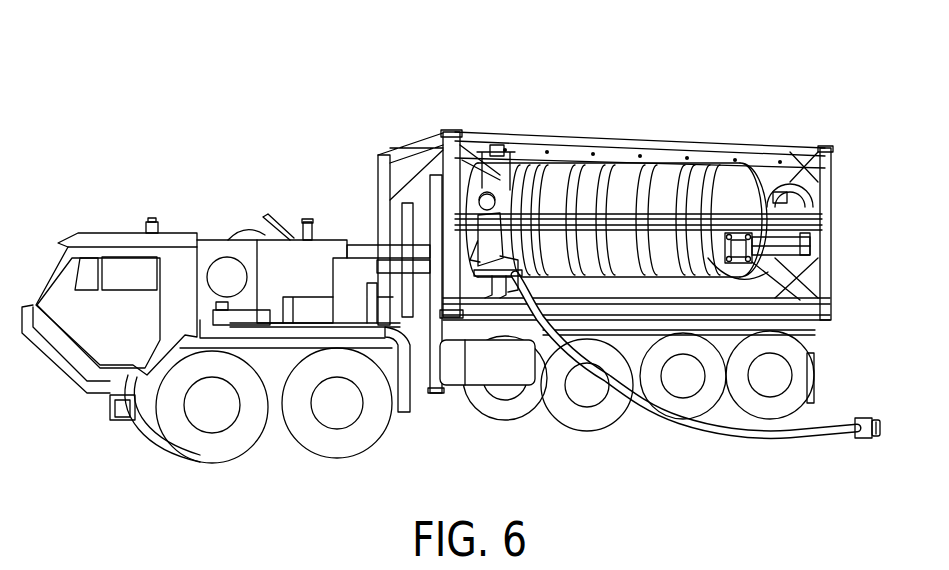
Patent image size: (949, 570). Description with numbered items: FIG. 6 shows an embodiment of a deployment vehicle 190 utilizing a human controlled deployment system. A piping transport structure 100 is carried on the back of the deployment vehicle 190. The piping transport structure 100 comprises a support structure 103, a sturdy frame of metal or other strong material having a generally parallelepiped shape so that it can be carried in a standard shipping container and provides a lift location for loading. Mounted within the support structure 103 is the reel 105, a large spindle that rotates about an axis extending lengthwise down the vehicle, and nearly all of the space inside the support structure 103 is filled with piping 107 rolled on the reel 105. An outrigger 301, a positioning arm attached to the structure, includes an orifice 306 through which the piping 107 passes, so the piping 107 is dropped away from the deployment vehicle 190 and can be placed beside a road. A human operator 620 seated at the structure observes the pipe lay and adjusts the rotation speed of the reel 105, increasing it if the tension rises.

The piping transport structure 100 is at (459, 261).
The deployment vehicle 190 is at (116, 232).
The human operator 620 is at (488, 190).
The piping 107 is at (700, 172).
The reel 105 is at (768, 163).
The support structure 103 is at (830, 186).
The outrigger 301 is at (820, 272).
The orifice 306 is at (758, 262).